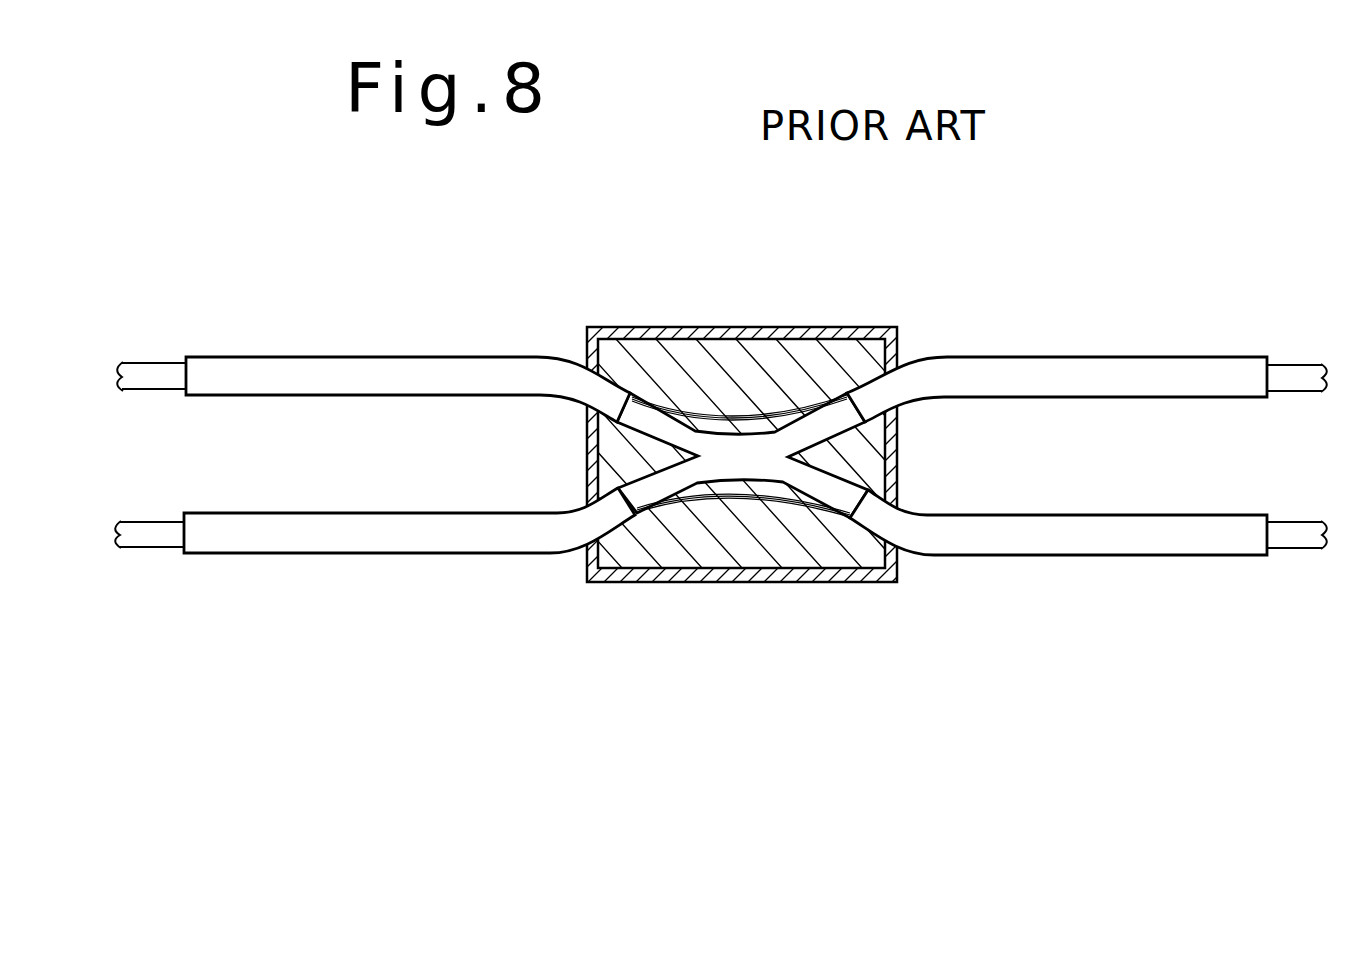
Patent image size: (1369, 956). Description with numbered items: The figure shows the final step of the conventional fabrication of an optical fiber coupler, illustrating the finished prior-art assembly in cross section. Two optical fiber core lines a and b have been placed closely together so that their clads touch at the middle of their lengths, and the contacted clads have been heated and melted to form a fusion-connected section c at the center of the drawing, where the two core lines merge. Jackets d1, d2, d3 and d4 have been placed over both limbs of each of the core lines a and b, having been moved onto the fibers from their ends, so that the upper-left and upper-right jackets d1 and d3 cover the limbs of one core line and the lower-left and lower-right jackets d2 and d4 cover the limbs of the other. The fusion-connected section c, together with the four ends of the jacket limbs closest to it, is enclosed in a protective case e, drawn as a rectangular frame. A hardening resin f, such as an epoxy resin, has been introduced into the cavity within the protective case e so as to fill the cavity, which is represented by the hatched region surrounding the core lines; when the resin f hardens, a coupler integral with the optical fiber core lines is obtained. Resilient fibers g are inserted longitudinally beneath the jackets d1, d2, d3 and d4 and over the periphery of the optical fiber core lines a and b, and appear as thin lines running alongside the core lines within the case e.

The jacket d1 is at (353, 367).
The jacket d2 is at (330, 545).
The jacket d3 is at (1153, 372).
The jacket d4 is at (1148, 546).
The optical fiber core line a is at (647, 408).
The optical fiber core line b is at (652, 488).
The fusion-connected section c is at (755, 453).
The protective case e is at (870, 336).
The hardening resin f is at (816, 540).
The resilient fibers g is at (745, 415).